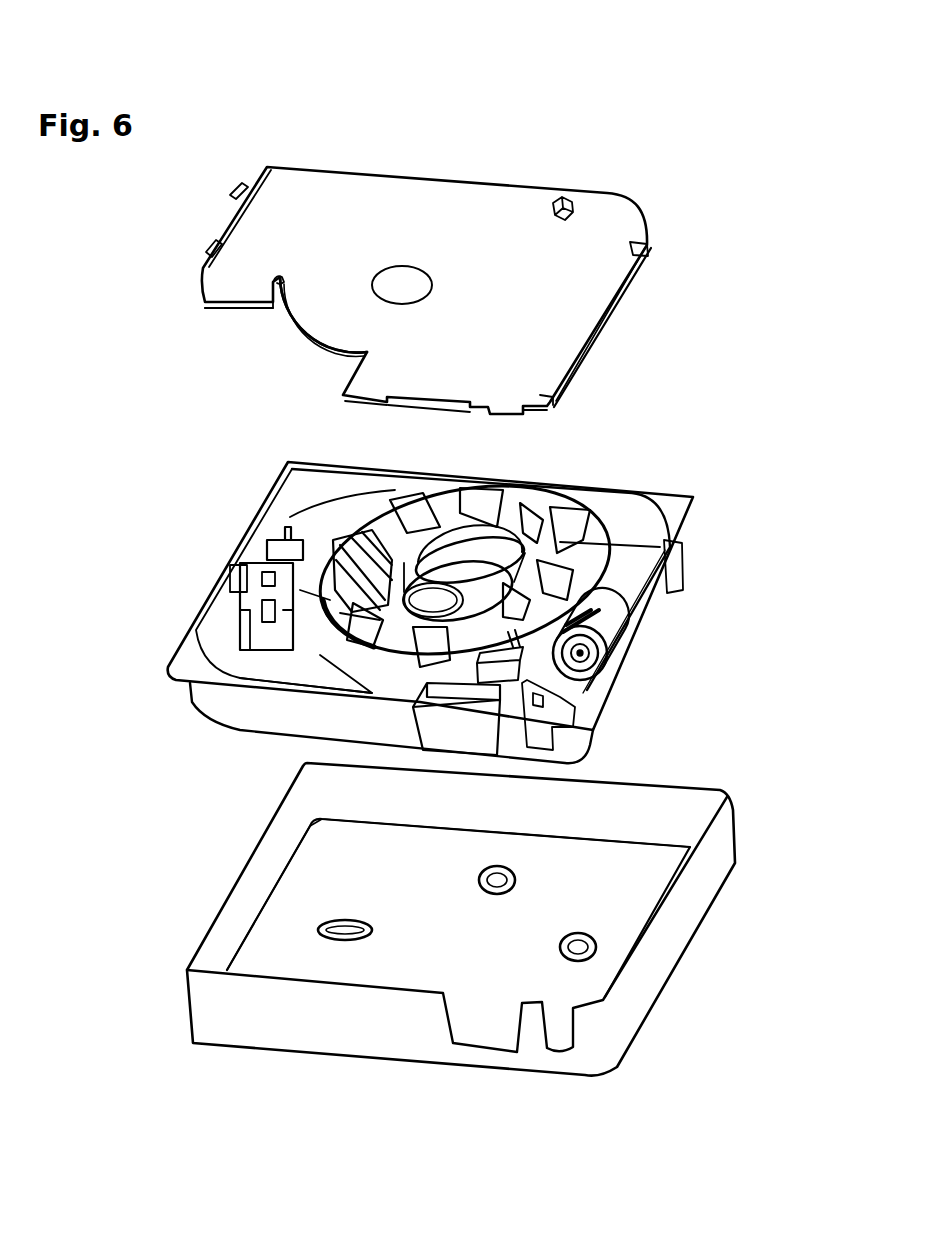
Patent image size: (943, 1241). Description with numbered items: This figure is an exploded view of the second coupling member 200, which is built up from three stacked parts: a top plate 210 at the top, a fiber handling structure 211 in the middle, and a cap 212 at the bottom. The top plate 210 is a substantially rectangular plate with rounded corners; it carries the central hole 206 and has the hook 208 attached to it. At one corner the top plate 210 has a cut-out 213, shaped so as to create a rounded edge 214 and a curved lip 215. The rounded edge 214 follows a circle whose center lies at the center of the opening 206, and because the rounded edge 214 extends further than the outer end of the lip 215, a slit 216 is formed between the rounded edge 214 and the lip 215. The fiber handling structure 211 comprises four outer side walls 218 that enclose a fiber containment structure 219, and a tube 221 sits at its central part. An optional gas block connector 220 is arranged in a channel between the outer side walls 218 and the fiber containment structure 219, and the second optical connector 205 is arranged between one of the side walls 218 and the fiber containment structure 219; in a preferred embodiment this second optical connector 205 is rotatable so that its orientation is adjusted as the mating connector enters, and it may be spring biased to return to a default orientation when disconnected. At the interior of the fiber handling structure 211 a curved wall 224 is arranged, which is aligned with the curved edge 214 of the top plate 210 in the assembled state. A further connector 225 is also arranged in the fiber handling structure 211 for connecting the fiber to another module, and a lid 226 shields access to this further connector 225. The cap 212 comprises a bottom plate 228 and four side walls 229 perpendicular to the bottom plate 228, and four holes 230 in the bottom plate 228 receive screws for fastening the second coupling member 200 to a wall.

The second coupling member 200 is at (390, 108).
The second optical connector 205 is at (258, 568).
The central hole 206 is at (433, 288).
The hook 208 is at (567, 197).
The top plate 210 is at (672, 247).
The fiber handling structure 211 is at (434, 612).
The cap 212 is at (417, 919).
The cut-out 213 is at (203, 351).
The rounded edge 214 is at (306, 338).
The curved lip 215 is at (205, 303).
The slit 216 is at (287, 283).
The outer side walls 218 is at (240, 730).
The fiber containment structure 219 is at (581, 522).
The gas block connector 220 is at (620, 630).
The tube 221 is at (445, 593).
The curved wall 224 is at (327, 657).
The further connector 225 is at (473, 668).
The lid 226 is at (438, 741).
The bottom plate 228 is at (617, 883).
The side walls 229 is at (293, 845).
The holes 230 is at (373, 928).